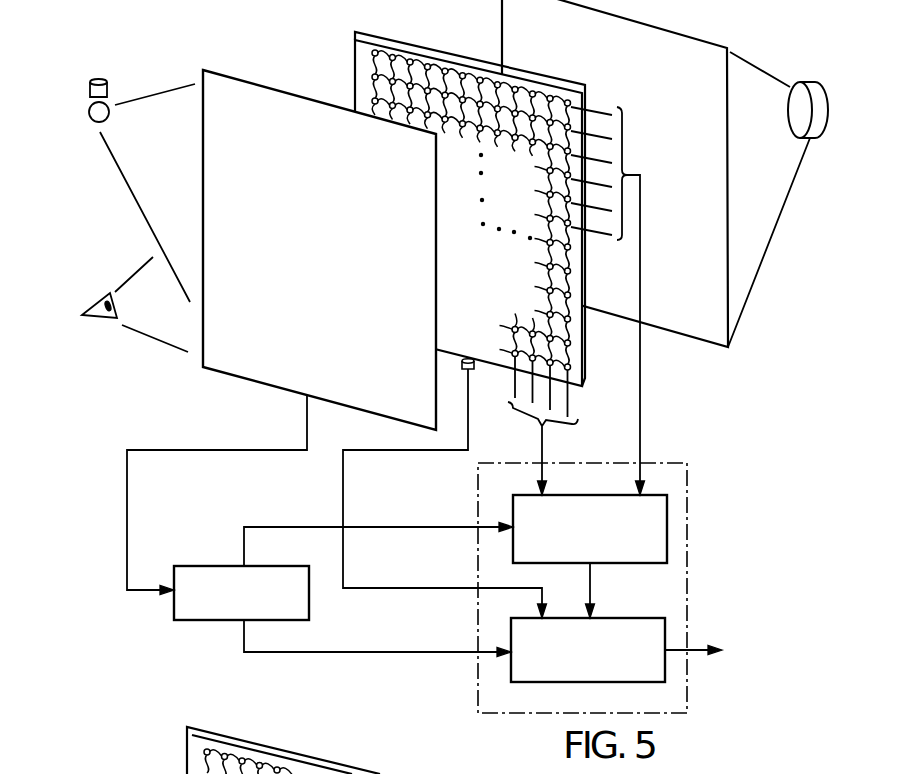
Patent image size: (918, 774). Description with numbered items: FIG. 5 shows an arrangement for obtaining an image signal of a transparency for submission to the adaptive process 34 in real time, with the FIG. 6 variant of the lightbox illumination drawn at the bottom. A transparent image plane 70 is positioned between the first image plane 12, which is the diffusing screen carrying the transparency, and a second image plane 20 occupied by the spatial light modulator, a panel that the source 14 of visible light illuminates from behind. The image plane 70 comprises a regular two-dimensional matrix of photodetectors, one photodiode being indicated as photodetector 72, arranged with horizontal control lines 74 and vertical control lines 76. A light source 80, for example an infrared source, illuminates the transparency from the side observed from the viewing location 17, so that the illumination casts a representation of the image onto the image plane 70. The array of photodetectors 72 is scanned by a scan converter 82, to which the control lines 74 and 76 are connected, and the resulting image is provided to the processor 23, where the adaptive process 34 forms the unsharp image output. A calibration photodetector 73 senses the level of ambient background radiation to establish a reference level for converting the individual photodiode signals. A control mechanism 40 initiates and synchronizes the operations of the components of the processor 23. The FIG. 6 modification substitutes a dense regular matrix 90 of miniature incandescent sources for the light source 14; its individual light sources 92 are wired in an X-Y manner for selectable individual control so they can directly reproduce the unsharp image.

In FIG. 5, the first image plane 12 is at (238, 79).
In FIG. 5, the source of visible light 14 is at (804, 81).
In FIG. 5, the viewing location 17 is at (100, 306).
In FIG. 5, the screen 20 is at (592, 12).
In FIG. 5, the image processor 23 is at (688, 492).
In FIG. 5, the adaptive process 34 is at (618, 683).
In FIG. 5, the control mechanism 40 is at (205, 565).
In FIG. 5, the transparent image plane 70 is at (353, 43).
In FIG. 5, the photodetector 72 is at (374, 50).
In FIG. 5, the calibration photodetector 73 is at (476, 365).
In FIG. 5, the horizontal control lines 74 is at (641, 343).
In FIG. 5, the vertical control lines 76 is at (543, 451).
In FIG. 5, the light source 80 is at (107, 115).
In FIG. 5, the scan converter 82 is at (633, 563).
In FIG. 6, the two-dimensional matrix of miniature incandescent sources 90 is at (346, 764).
In FIG. 6, the individual light sources 92 is at (210, 749).